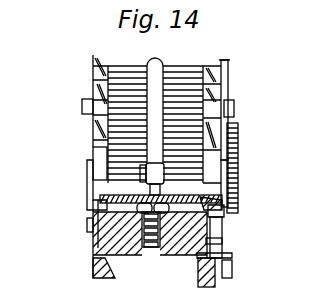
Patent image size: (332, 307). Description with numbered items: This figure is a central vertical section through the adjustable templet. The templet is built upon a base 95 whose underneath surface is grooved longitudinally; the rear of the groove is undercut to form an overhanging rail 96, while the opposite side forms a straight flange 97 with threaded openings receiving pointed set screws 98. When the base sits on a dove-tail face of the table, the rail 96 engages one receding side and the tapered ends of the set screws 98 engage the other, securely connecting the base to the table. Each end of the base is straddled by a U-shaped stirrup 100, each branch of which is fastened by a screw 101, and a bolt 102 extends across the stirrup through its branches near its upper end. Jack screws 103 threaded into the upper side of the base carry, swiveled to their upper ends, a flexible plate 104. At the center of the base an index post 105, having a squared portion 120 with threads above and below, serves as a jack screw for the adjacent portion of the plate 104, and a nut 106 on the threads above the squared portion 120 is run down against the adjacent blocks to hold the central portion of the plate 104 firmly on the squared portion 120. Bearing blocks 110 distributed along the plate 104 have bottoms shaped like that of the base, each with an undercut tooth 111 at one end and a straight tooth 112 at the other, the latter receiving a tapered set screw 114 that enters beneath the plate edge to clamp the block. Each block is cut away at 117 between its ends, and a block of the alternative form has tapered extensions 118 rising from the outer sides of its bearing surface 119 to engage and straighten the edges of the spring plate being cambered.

The base 95 is at (216, 246).
The overhanging rail 96 is at (100, 262).
The straight flange 97 is at (215, 286).
The set screws 98 is at (201, 266).
The U-shaped stirrup 100 is at (204, 67).
The screw 101 is at (88, 226).
The bolt 102 is at (234, 103).
The jack screws 103 is at (95, 201).
The flexible plate 104 is at (204, 203).
The index post 105 is at (167, 64).
The nut 106 is at (94, 160).
The bearing blocks 110 is at (82, 104).
The undercut tooth 111 is at (112, 192).
The straight tooth 112 is at (232, 191).
The set screw 114 is at (239, 128).
The cut-away 117 is at (93, 129).
The tapered extensions 118 is at (93, 60).
The bearing surface 119 is at (100, 74).
The squared portion 120 is at (216, 224).